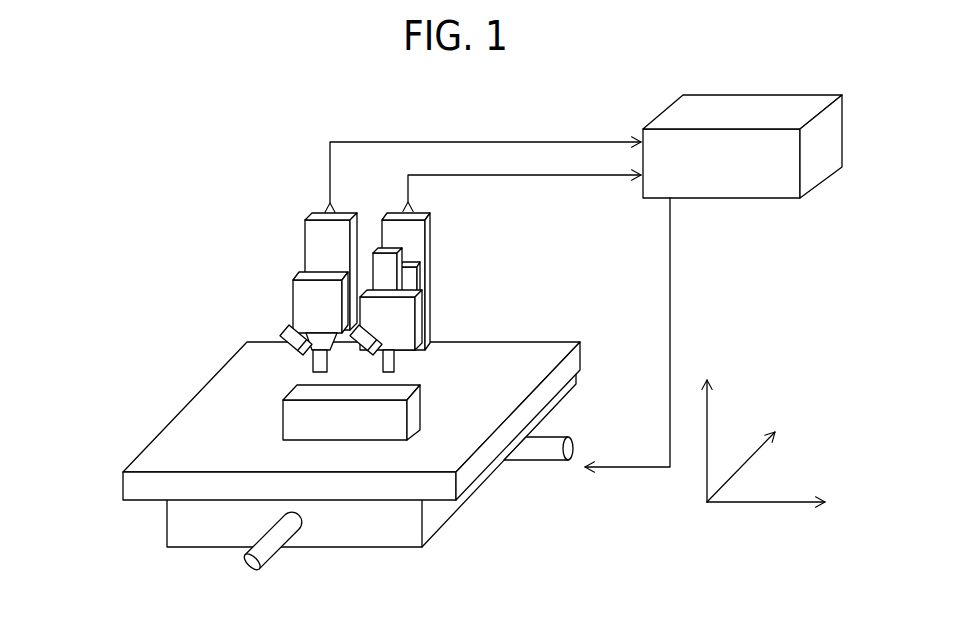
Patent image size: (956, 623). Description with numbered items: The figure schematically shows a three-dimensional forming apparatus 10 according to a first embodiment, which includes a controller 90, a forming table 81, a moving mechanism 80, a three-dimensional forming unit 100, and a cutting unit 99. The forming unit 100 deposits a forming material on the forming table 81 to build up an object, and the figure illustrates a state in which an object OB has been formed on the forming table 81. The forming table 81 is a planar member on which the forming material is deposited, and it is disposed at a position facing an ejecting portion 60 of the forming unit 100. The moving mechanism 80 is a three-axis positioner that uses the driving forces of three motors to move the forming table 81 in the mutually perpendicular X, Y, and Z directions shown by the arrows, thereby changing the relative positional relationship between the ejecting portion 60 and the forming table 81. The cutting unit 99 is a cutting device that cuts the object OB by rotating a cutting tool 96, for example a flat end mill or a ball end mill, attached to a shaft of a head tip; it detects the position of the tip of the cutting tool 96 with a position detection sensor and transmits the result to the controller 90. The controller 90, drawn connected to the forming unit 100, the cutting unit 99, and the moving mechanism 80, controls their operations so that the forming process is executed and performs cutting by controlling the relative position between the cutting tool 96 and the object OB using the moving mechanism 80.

The three-dimensional forming apparatus 10 is at (118, 146).
The ejecting portion 60 is at (340, 282).
The cutting unit 99 is at (252, 287).
The three-dimensional forming unit 100 is at (433, 245).
The cutting tool 96 is at (312, 361).
The moving mechanism 80 is at (365, 472).
The forming table 81 is at (440, 503).
The controller 90 is at (683, 200).
The object OB is at (282, 420).